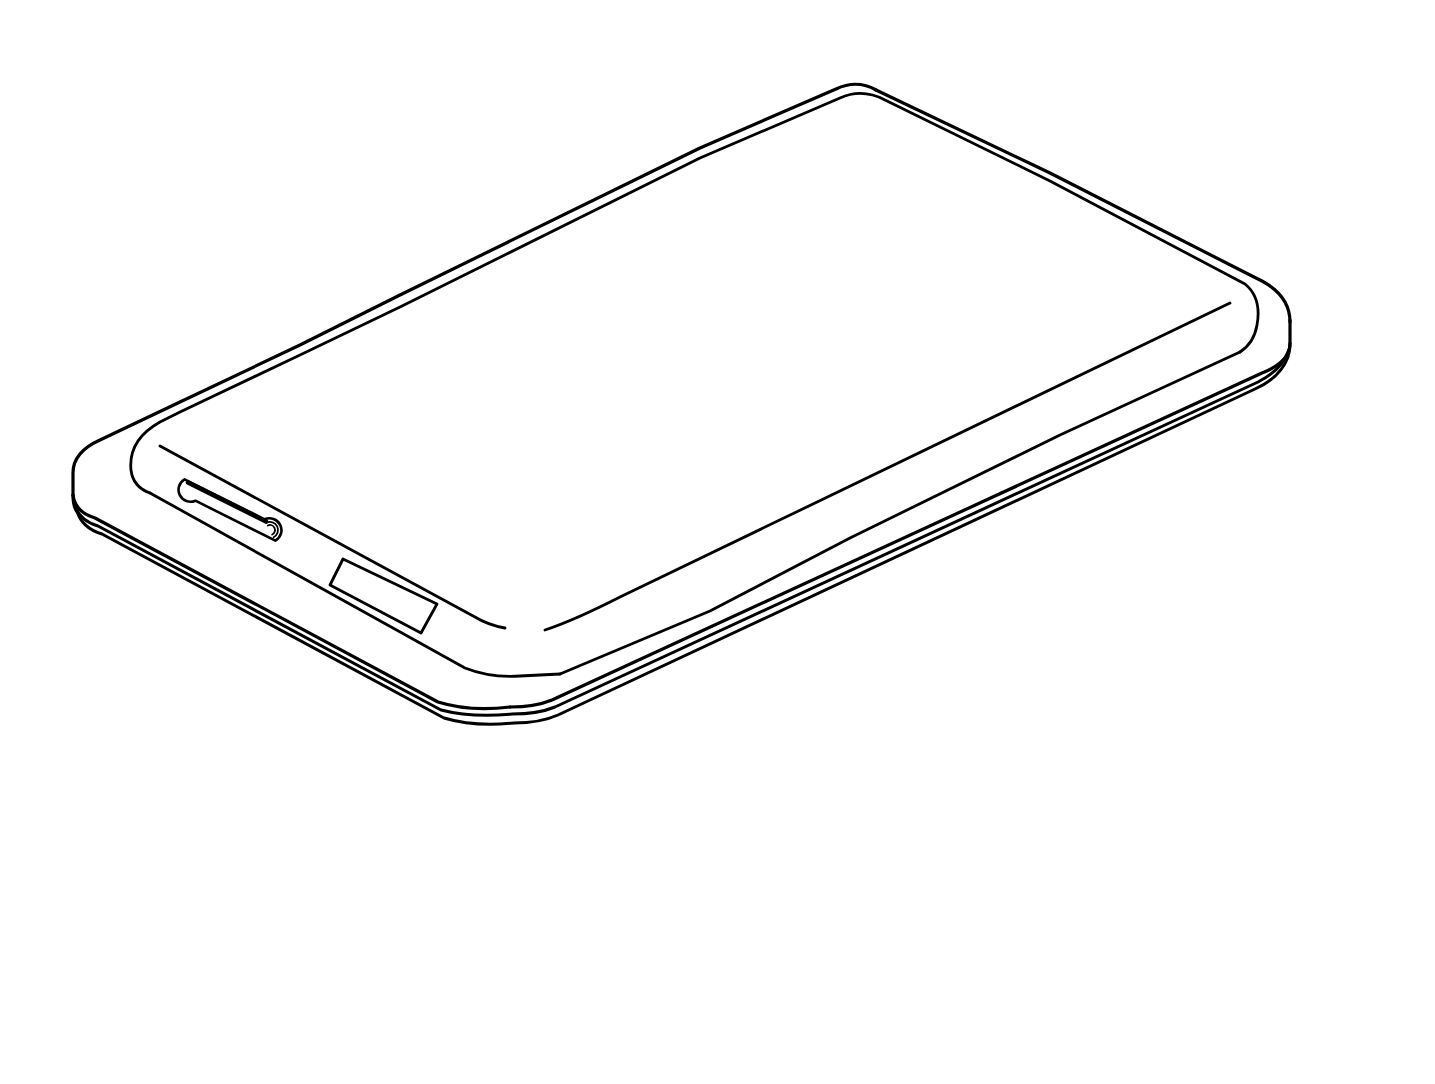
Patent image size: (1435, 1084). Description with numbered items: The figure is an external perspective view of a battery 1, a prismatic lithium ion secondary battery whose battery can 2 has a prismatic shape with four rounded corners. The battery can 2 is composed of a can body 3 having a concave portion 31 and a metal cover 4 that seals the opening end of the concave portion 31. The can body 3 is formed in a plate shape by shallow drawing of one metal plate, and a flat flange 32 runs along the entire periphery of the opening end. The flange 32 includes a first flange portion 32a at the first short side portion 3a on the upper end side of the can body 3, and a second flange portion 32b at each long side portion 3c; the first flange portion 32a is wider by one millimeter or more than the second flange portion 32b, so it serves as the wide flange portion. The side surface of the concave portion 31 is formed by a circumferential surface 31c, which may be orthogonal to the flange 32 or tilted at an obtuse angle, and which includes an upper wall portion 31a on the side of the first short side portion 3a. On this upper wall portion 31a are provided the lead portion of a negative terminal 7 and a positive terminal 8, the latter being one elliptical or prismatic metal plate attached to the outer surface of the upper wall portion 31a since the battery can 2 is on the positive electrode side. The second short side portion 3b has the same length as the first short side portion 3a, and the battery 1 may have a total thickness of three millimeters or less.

The battery 1 is at (662, 152).
The battery can 2 is at (1350, 228).
The can body 3 is at (1267, 302).
The first short side portion 3a is at (207, 597).
The second short side portion 3b is at (988, 128).
The long side portion 3c is at (877, 568).
The metal cover 4 is at (1247, 383).
The negative terminal 7 is at (227, 512).
The positive terminal 8 is at (388, 597).
The concave portion 31 is at (1040, 218).
The upper wall portion 31a is at (306, 547).
The circumferential surface 31c is at (718, 577).
The flange 32 is at (1104, 428).
The first flange portion 32a is at (318, 617).
The second flange portion 32b is at (1015, 468).